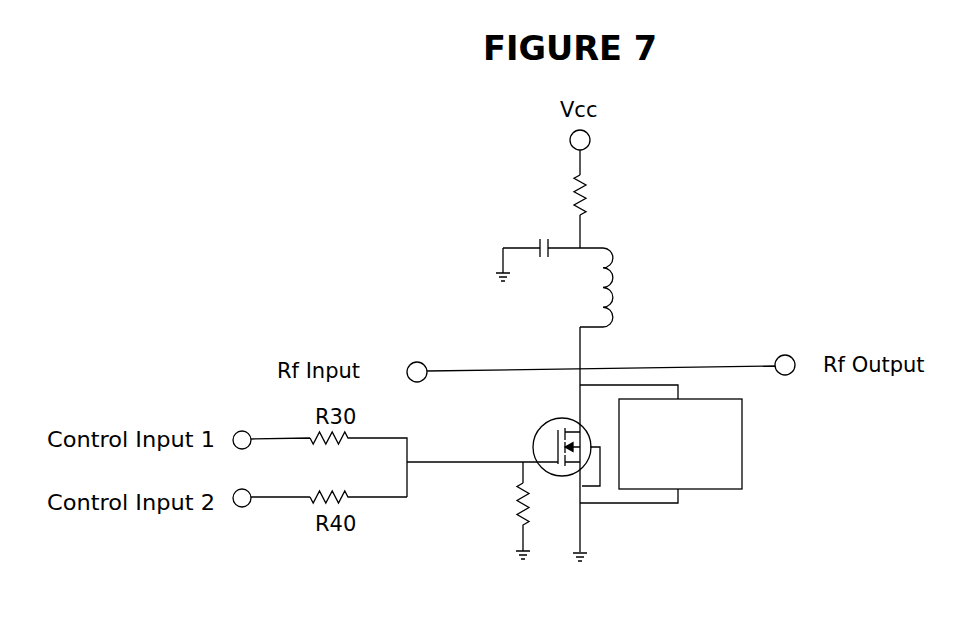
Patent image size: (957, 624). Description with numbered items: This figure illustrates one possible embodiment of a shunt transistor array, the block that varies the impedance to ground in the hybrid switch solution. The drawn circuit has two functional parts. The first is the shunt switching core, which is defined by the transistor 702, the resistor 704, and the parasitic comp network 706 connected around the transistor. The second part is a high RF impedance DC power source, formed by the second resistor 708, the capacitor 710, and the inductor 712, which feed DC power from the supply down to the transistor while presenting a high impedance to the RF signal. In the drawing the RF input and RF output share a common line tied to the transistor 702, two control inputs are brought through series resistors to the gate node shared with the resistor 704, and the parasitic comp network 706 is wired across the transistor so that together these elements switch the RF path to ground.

The transistor Q10 702 is at (540, 424).
The resistor R10 704 is at (522, 527).
The parasitic comp network 706 is at (742, 418).
The resistor R20 708 is at (578, 214).
The capacitor C10 710 is at (539, 246).
The inductor L10 712 is at (610, 304).